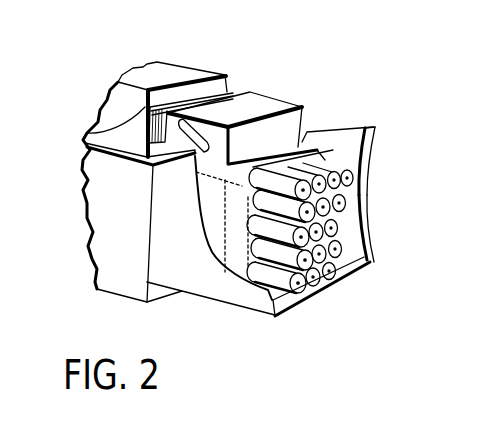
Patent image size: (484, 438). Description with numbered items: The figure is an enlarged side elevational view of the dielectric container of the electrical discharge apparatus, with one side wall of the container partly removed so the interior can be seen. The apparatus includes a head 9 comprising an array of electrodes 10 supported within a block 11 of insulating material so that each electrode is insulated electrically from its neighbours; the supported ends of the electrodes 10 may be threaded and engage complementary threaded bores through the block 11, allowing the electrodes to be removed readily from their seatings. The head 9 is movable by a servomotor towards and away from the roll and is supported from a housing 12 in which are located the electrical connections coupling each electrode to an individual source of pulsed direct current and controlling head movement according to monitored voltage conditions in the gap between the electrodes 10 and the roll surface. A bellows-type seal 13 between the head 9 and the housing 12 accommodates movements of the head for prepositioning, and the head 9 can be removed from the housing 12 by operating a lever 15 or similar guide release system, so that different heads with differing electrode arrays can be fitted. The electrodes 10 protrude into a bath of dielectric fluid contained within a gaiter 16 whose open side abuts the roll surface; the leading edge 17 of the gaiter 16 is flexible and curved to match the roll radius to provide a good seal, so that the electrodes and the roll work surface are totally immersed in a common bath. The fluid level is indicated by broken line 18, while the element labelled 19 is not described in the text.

The head 9 is at (262, 107).
The electrodes 10 is at (340, 210).
The block of insulating material 11 is at (304, 136).
The housing 12 is at (177, 75).
The bellows-type seal 13 is at (93, 128).
The lever 15 is at (143, 108).
The gaiter 16 is at (376, 150).
The leading edge of the gaiter 17 is at (370, 248).
The broken line indicating dielectric fluid level 18 is at (158, 197).
The bottom plate 19 is at (311, 298).